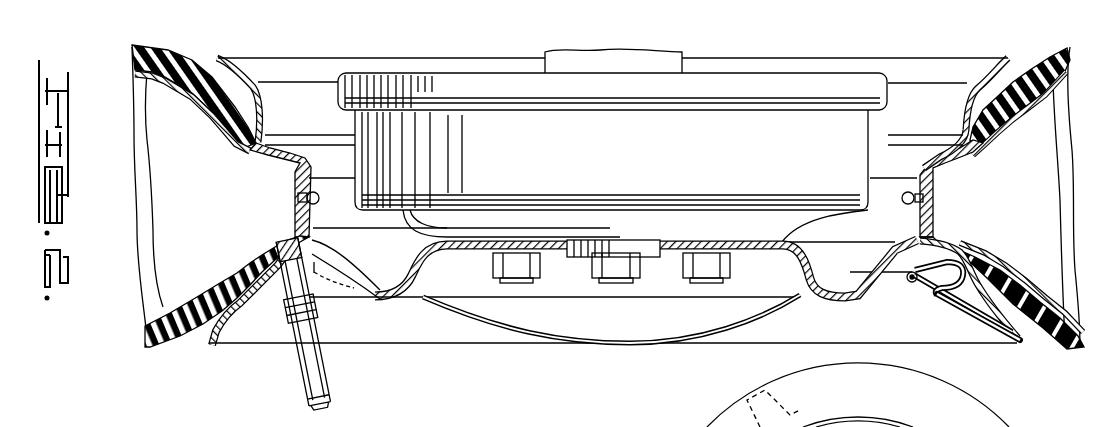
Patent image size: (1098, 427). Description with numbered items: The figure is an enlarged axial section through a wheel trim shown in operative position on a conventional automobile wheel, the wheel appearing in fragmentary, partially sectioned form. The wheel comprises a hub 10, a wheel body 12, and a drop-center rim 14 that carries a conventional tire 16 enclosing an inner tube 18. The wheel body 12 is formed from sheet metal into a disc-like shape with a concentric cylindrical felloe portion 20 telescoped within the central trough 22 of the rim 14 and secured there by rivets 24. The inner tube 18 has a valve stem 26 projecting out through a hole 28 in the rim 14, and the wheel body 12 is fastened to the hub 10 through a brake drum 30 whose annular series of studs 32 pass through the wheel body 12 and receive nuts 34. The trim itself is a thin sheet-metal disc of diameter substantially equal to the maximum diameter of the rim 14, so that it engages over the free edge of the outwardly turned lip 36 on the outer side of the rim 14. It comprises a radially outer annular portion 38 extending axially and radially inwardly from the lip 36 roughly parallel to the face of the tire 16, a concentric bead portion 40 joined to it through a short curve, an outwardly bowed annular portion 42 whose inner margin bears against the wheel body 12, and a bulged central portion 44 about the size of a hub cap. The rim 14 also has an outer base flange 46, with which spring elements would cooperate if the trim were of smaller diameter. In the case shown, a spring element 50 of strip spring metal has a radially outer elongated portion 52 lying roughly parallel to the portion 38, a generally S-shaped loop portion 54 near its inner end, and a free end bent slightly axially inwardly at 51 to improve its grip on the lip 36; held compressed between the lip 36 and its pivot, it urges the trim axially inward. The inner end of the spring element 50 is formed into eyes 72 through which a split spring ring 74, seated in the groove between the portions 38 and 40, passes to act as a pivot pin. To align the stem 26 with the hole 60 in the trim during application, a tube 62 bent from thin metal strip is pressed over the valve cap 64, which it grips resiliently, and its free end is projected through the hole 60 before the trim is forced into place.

The hub 10 is at (643, 250).
The wheel body 12 is at (797, 270).
The rim 14 is at (943, 145).
The tire 16 is at (1068, 350).
The inner tube 18 is at (1060, 235).
The felloe portion 20 is at (915, 180).
The central trough 22 is at (937, 175).
The rivets 24 is at (908, 200).
The stem 26 is at (270, 253).
The hole 28 is at (297, 300).
The brake drum 30 is at (633, 137).
The studs 32 is at (708, 285).
The nuts 34 is at (727, 262).
The lip 36 is at (1057, 338).
The radially outer annular portion 38 is at (968, 292).
The annular bead portion 40 is at (887, 275).
The outwardly bowed annular portion 42 is at (835, 298).
The central portion 44 is at (642, 345).
The outer base flange 46 is at (960, 293).
The spring element 50 is at (945, 268).
The bent free end 51 is at (995, 287).
The radially outer elongated portion 52 is at (998, 325).
The S-shaped loop portion 54 is at (945, 243).
The hole 60 is at (283, 320).
The tube 62 is at (322, 368).
The valve cap 64 is at (325, 300).
The eyes 72 is at (913, 282).
The split spring ring 74 is at (308, 275).